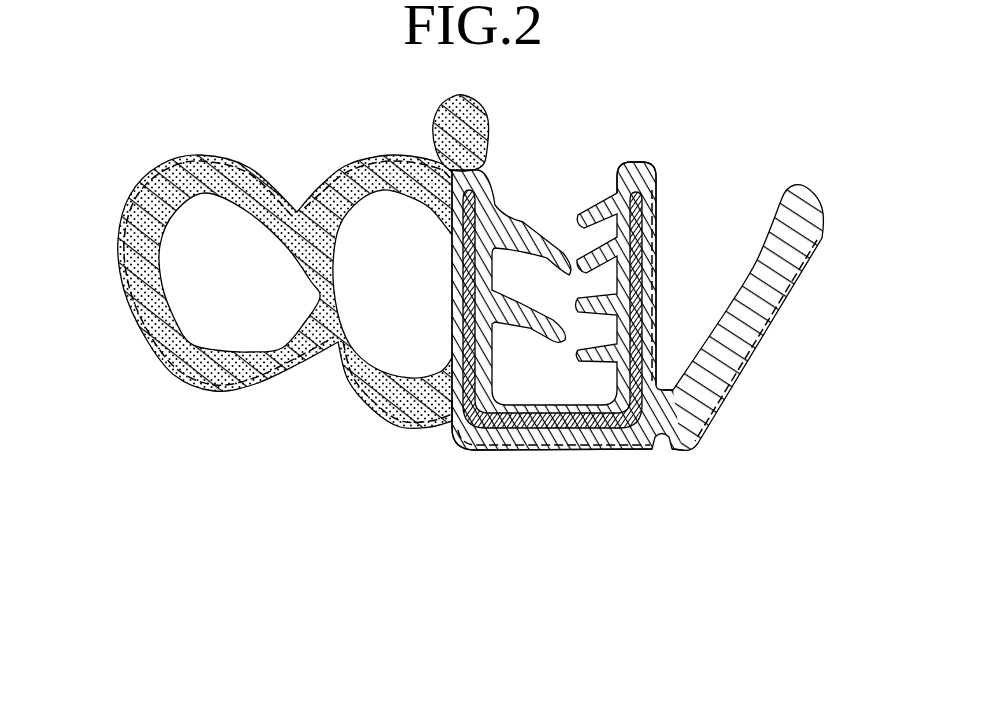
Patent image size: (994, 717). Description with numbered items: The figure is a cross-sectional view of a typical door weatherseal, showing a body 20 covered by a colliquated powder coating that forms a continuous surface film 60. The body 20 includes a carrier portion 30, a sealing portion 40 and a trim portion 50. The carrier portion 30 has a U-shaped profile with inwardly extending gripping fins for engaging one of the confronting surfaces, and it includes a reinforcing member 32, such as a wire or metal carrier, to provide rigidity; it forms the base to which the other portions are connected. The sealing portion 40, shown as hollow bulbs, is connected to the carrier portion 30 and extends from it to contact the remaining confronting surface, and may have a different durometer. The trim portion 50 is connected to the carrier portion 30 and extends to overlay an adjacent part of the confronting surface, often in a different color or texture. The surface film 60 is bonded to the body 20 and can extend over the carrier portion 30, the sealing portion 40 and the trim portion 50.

The body 20 is at (636, 166).
The carrier portion 30 is at (532, 414).
The reinforcing member 32 is at (567, 452).
The sealing portion 40 is at (150, 345).
The trim portion 50 is at (781, 190).
The surface film 60 is at (127, 270).